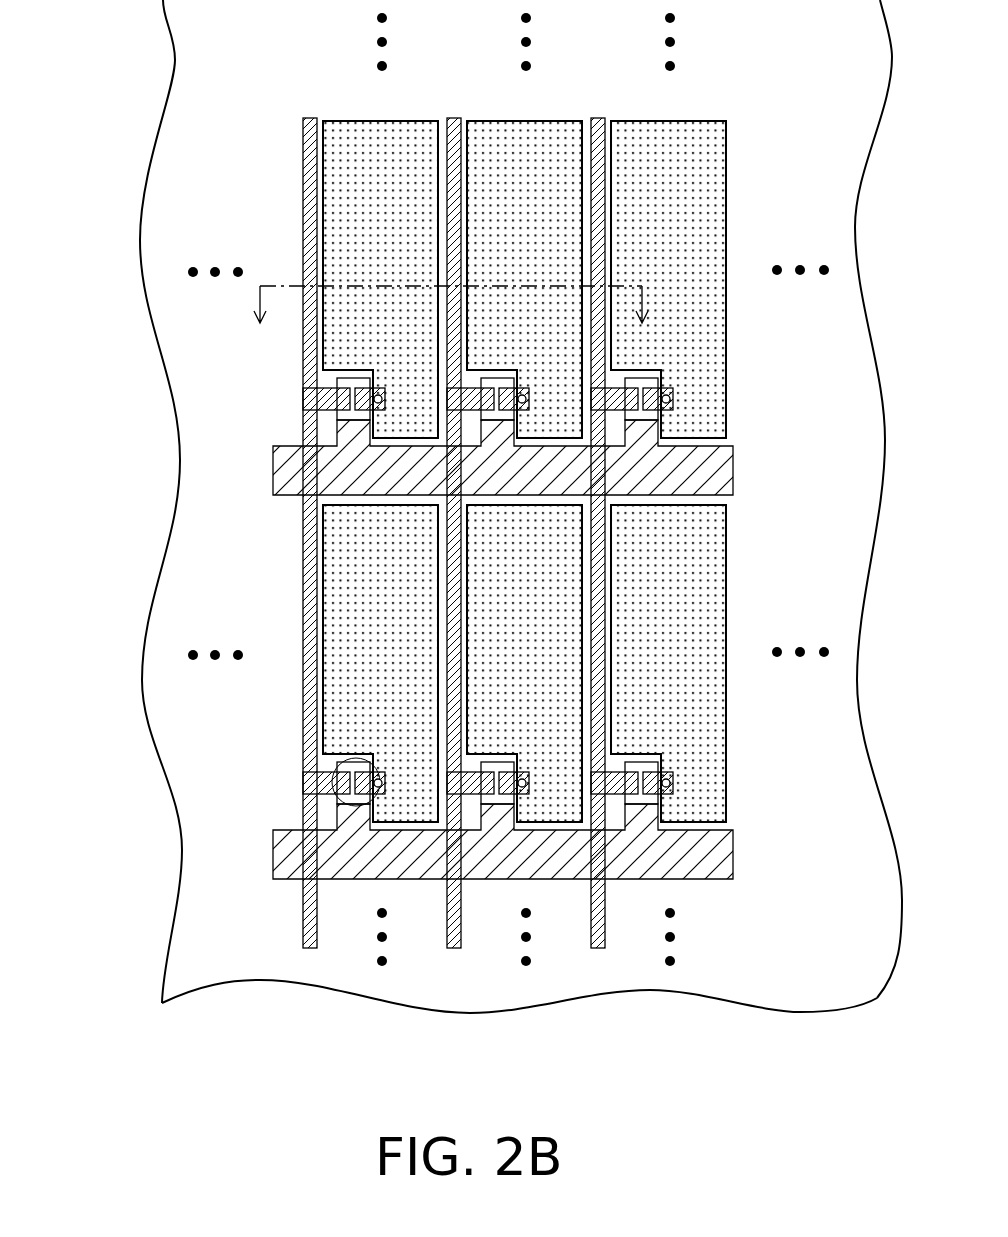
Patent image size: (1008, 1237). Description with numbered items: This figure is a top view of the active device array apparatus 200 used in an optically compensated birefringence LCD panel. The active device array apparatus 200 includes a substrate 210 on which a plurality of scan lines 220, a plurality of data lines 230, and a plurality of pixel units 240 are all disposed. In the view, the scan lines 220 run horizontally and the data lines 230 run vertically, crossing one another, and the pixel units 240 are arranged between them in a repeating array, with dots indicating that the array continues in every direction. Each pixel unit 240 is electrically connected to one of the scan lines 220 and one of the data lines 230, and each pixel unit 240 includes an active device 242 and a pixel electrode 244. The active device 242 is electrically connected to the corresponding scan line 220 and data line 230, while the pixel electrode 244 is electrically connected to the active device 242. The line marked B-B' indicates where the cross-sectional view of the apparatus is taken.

The active device array apparatus 200 is at (457, 535).
The substrate 210 is at (197, 960).
The scan line 220 is at (283, 855).
The data line 230 is at (303, 902).
The pixel unit 240 is at (343, 601).
The active device 242 is at (303, 777).
The pixel electrode 244 is at (343, 728).